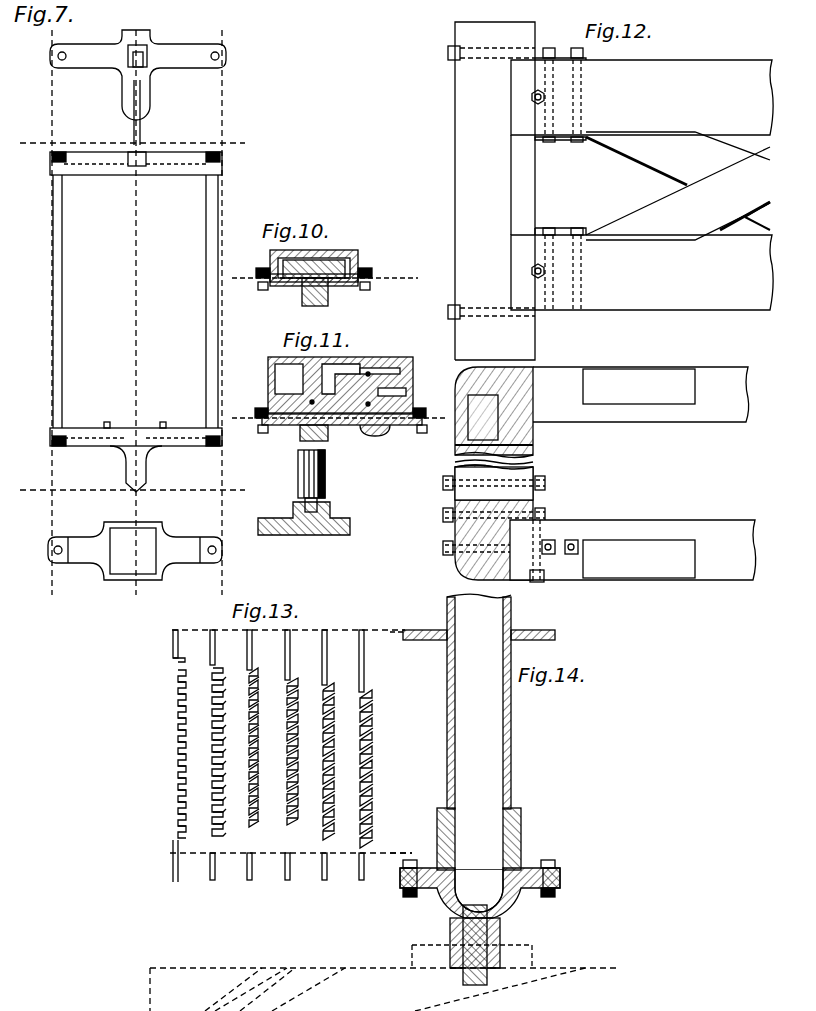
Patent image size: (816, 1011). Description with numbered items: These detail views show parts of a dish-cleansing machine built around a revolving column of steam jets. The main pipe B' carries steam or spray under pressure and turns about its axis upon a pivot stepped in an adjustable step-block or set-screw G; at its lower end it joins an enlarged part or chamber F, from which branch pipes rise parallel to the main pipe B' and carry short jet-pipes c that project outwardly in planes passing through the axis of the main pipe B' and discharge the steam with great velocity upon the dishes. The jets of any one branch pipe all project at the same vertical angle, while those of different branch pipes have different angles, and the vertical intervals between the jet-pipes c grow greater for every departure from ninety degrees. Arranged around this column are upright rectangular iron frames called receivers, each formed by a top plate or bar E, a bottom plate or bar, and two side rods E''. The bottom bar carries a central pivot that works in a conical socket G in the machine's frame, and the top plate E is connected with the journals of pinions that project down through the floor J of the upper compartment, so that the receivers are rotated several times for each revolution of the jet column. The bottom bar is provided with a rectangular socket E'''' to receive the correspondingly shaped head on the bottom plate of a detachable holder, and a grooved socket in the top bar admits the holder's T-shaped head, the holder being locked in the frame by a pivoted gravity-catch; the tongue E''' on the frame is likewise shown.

In FIG. 7, the top plate or bar E is at (138, 87).
In FIG. 11, the top plate or bar E is at (304, 492).
In FIG. 7, the side rods E'' is at (124, 299).
In FIG. 7, the frame crossbar tongue E''' is at (125, 461).
In FIG. 7, the rectangular socket E'''' is at (135, 551).
In FIG. 10, the floor J is at (325, 278).
In FIG. 11, the floor J is at (338, 399).
In FIG. 13, the jet-pipes c is at (267, 756).
In FIG. 14, the main pipe B' is at (472, 701).
In FIG. 14, the enlarged part or chamber F is at (475, 863).
In FIG. 14, the adjustable step-block or set-screw G is at (472, 945).